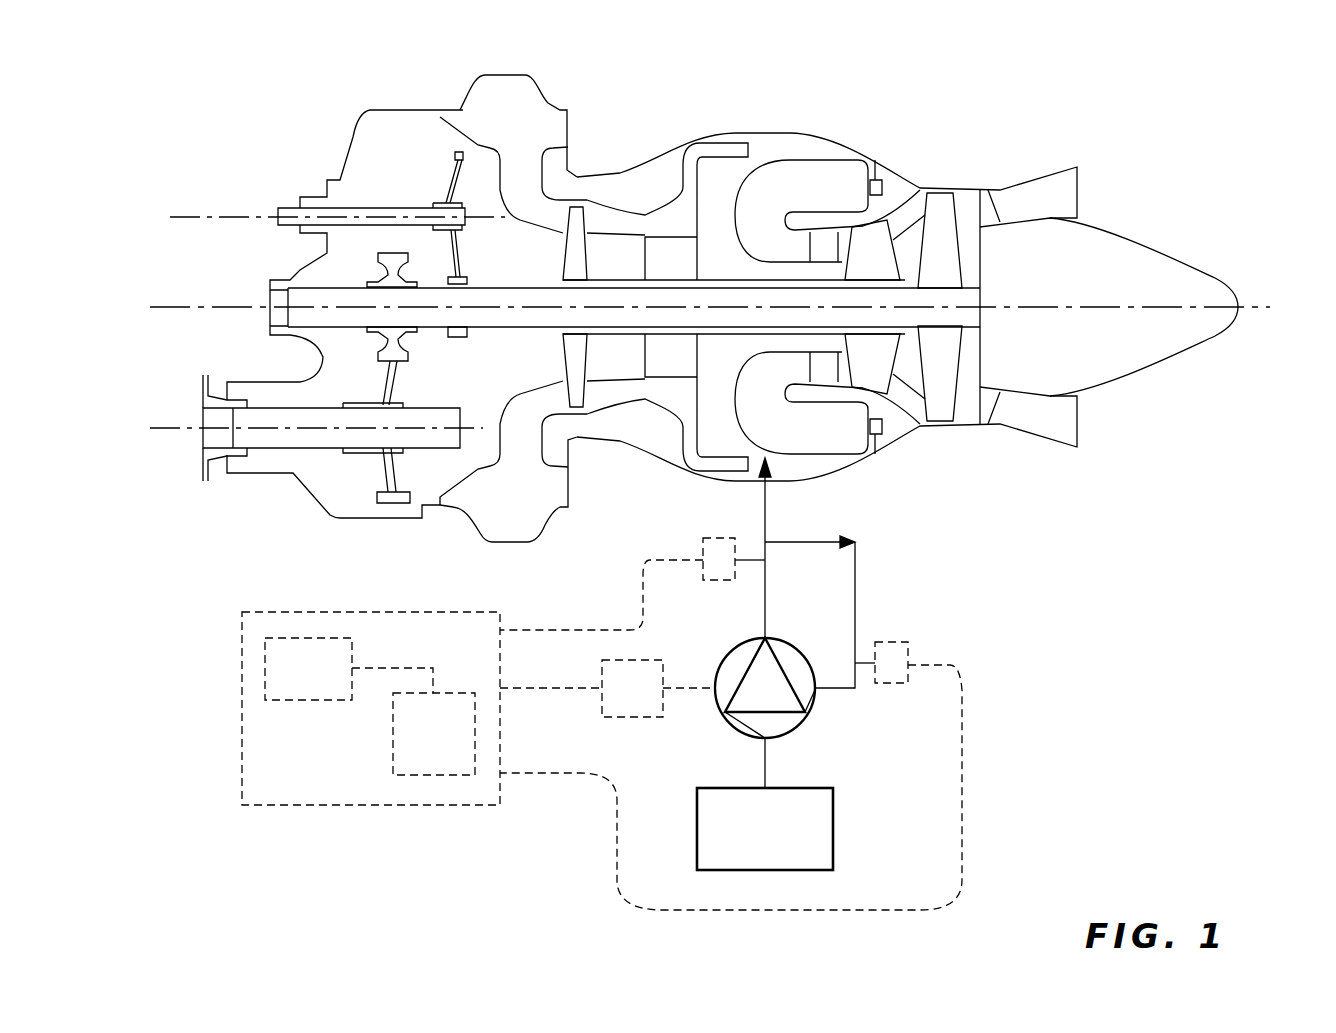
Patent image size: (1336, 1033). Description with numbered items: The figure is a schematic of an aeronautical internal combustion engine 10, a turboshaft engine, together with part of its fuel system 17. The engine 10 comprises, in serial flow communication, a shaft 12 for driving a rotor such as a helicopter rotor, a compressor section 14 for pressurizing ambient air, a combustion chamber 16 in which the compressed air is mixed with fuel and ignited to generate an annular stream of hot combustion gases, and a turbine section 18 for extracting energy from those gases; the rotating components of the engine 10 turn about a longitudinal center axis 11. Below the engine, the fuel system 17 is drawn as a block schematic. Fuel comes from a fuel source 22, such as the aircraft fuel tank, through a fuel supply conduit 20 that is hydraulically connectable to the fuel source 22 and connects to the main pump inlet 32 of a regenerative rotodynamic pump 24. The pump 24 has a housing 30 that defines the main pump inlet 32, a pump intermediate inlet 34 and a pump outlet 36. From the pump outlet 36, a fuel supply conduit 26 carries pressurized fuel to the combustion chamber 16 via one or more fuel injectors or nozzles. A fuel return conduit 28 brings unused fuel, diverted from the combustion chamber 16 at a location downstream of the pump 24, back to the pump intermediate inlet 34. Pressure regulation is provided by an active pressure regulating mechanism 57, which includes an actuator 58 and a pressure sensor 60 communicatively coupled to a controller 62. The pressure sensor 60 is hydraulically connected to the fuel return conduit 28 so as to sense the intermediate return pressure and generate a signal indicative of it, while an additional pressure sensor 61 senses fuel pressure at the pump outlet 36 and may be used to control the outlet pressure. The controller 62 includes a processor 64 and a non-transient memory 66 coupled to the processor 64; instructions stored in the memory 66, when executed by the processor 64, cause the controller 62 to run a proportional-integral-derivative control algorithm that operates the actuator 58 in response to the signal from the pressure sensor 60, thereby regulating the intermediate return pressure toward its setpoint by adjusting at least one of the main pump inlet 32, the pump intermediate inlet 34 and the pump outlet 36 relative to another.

The aeronautical internal combustion engine 10 is at (732, 291).
The longitudinal center axis 11 is at (1297, 303).
The shaft 12 is at (263, 437).
The compressor section 14 is at (668, 250).
The combustion chamber 16 is at (817, 183).
The fuel system 17 is at (879, 664).
The turbine section 18 is at (905, 388).
The fuel supply conduit 20 is at (765, 762).
The fuel source 22 is at (750, 846).
The regenerative rotodynamic pump 24 is at (786, 665).
The fuel supply conduit 26 is at (765, 510).
The fuel return conduit 28 is at (857, 592).
The housing 30 is at (807, 723).
The main pump inlet 32 is at (763, 738).
The pump intermediate inlet 34 is at (815, 690).
The pump outlet 36 is at (765, 640).
The active pressure regulating mechanism 57 is at (516, 702).
The actuator 58 is at (618, 704).
The pressure sensor 60 is at (908, 650).
The pressure sensor 61 is at (697, 547).
The controller 62 is at (371, 708).
The processor 64 is at (294, 684).
The non-transient memory 66 is at (420, 749).